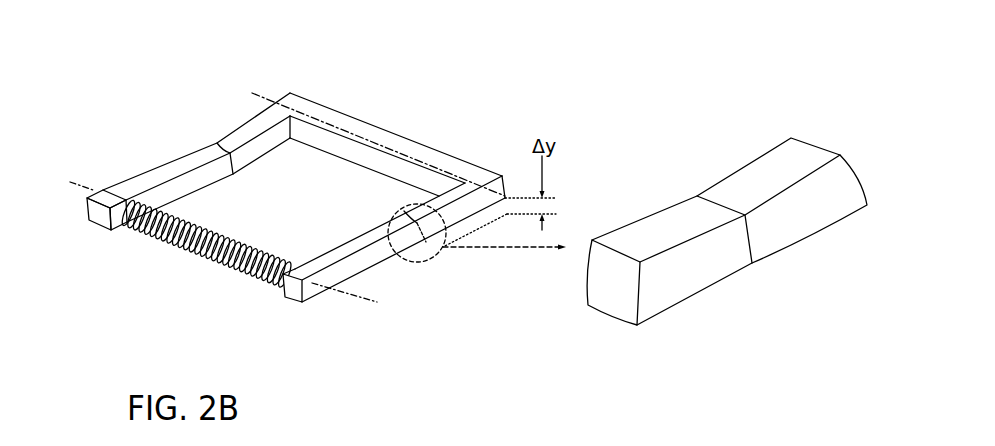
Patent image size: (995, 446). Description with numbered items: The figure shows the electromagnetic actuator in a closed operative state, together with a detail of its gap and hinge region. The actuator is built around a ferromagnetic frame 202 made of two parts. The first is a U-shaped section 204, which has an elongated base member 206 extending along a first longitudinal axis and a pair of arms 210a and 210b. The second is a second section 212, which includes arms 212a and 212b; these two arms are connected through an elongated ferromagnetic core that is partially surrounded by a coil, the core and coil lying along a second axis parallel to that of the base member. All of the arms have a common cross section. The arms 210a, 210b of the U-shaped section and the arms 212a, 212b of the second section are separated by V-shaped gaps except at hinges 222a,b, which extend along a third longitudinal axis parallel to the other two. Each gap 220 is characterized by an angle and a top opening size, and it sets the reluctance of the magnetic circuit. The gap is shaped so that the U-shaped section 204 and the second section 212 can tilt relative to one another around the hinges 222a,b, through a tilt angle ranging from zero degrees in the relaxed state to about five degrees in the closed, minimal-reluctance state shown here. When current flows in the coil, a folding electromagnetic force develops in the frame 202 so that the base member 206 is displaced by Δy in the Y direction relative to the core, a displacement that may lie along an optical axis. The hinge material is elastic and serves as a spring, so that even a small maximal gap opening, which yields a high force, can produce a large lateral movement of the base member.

The ferromagnetic frame 202 is at (414, 97).
The U-shaped section 204 is at (323, 106).
The elongated base member 206 is at (476, 166).
The arm 210a is at (239, 125).
The arm 210b is at (468, 212).
The second section 212 is at (153, 279).
The arm 212a is at (158, 177).
The arm 212b is at (389, 268).
The gap 220 is at (697, 196).
The hinges 222a,b is at (752, 263).